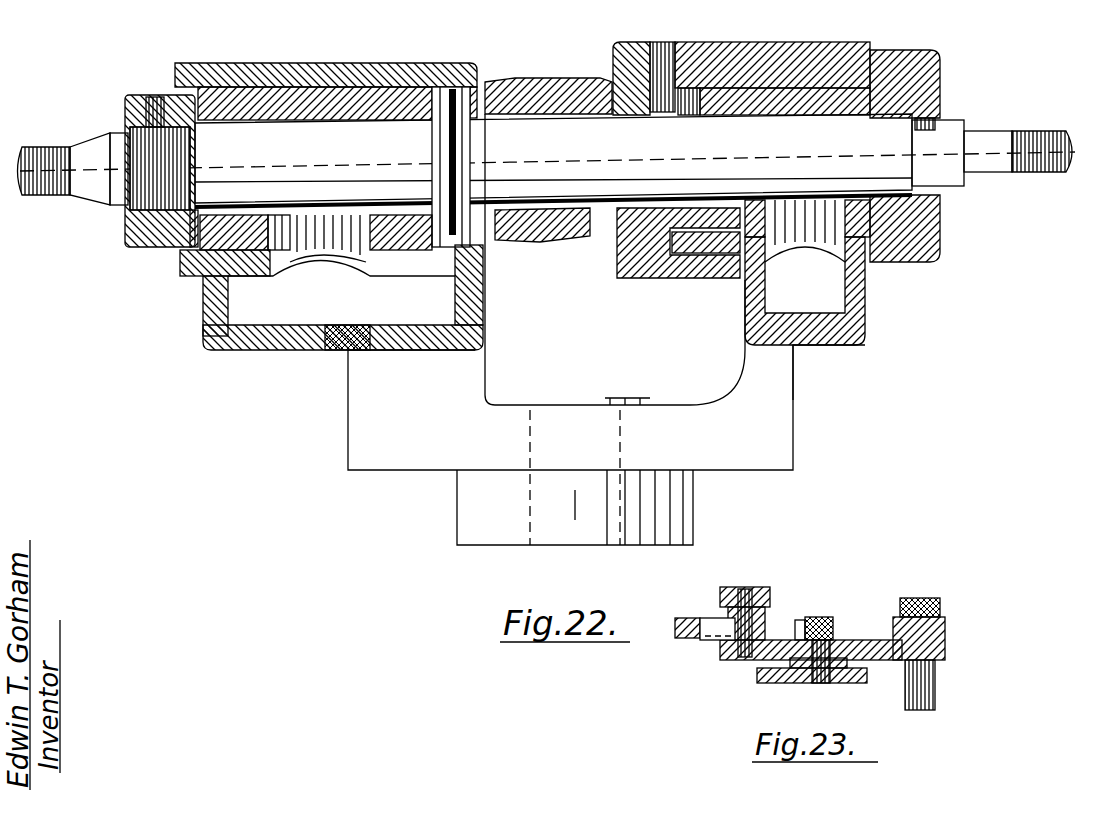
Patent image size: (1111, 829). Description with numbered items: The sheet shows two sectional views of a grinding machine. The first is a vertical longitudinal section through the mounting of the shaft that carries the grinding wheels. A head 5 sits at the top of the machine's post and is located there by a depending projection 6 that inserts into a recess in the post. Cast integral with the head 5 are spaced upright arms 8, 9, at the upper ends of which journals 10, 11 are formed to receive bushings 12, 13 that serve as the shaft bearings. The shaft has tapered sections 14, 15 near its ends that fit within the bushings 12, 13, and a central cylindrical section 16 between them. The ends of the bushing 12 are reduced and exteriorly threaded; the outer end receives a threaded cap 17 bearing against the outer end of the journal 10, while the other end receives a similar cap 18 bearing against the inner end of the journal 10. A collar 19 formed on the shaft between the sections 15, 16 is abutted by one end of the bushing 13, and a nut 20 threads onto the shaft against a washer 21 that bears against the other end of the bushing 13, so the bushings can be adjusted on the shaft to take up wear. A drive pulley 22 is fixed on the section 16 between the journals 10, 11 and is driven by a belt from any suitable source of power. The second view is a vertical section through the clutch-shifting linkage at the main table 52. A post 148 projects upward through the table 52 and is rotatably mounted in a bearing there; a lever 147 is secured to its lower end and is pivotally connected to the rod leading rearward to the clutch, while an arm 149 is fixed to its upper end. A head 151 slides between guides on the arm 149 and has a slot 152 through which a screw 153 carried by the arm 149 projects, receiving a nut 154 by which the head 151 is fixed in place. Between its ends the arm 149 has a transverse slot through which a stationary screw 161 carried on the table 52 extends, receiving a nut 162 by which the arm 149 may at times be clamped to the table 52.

In FIG. 22, the head 5 is at (718, 447).
In FIG. 22, the depending projection 6 is at (590, 517).
In FIG. 22, the upright arm 8 is at (788, 358).
In FIG. 22, the upright arm 9 is at (360, 367).
In FIG. 22, the journal 10 is at (797, 62).
In FIG. 22, the journal 11 is at (205, 282).
In FIG. 22, the bushing 12 is at (828, 85).
In FIG. 22, the bushing 13 is at (322, 110).
In FIG. 22, the tapered section 14 is at (835, 173).
In FIG. 22, the tapered section 15 is at (345, 195).
In FIG. 22, the central cylindrical section 16 is at (570, 187).
In FIG. 22, the threaded cap 17 is at (915, 245).
In FIG. 22, the cap 18 is at (715, 240).
In FIG. 22, the collar 19 is at (442, 240).
In FIG. 22, the nut 20 is at (150, 247).
In FIG. 22, the washer 21 is at (177, 242).
In FIG. 22, the drive pulley 22 is at (612, 255).
In FIG. 23, the main table 52 is at (785, 683).
In FIG. 23, the lever 147 is at (906, 710).
In FIG. 23, the post 148 is at (940, 655).
In FIG. 23, the arm 149 is at (858, 640).
In FIG. 23, the head 151 is at (680, 640).
In FIG. 23, the slot 152 is at (708, 640).
In FIG. 23, the screw 153 is at (747, 587).
In FIG. 23, the nut 154 is at (720, 597).
In FIG. 23, the stationary screw 161 is at (815, 682).
In FIG. 23, the nut 162 is at (800, 620).